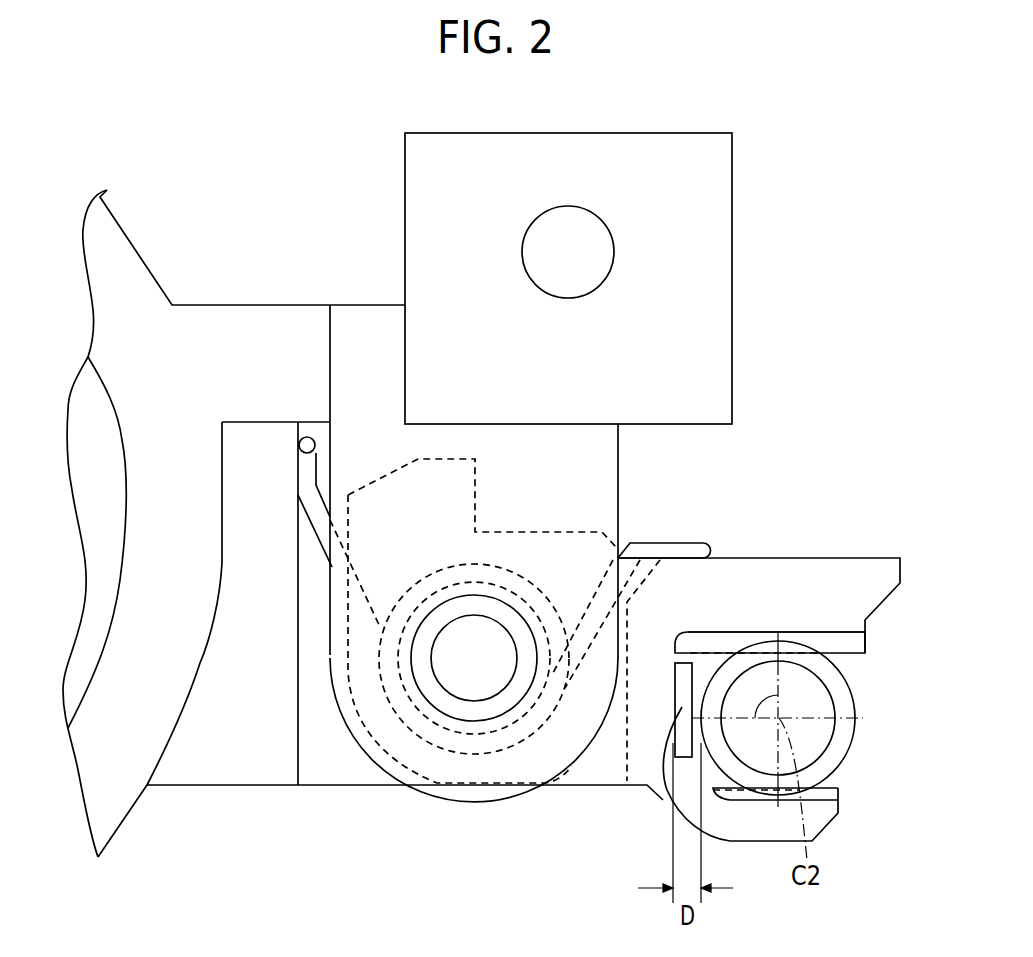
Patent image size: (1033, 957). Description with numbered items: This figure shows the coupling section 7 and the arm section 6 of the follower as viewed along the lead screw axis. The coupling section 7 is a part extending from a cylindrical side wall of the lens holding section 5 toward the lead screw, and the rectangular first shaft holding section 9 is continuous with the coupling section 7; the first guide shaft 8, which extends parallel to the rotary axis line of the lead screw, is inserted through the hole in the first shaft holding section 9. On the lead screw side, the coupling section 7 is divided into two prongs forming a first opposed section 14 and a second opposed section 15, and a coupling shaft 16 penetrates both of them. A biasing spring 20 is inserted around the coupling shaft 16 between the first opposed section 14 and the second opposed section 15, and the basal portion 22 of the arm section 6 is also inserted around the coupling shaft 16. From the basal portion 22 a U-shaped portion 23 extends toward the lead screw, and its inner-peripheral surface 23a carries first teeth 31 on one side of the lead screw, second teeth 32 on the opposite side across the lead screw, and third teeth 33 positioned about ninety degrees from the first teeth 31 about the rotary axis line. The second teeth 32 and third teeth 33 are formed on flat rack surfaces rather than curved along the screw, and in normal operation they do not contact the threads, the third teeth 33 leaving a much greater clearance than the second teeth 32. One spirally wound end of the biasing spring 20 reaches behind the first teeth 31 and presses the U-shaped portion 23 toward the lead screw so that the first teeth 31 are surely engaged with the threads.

The lens holding section 5 is at (120, 797).
The arm section 6 is at (792, 587).
The coupling section 7 is at (333, 787).
The first guide shaft 8 is at (588, 227).
The first shaft holding section 9 is at (718, 202).
The first opposed section 14 is at (577, 773).
The second opposed section 15 is at (607, 773).
The coupling shaft 16 is at (458, 682).
The biasing spring 20 is at (672, 542).
The basal portion 22 is at (520, 765).
The U-shaped portion 23 is at (862, 575).
The inner-peripheral surface 23a is at (698, 650).
The first teeth 31 is at (855, 643).
The second teeth 32 is at (827, 793).
The third teeth 33 is at (682, 708).